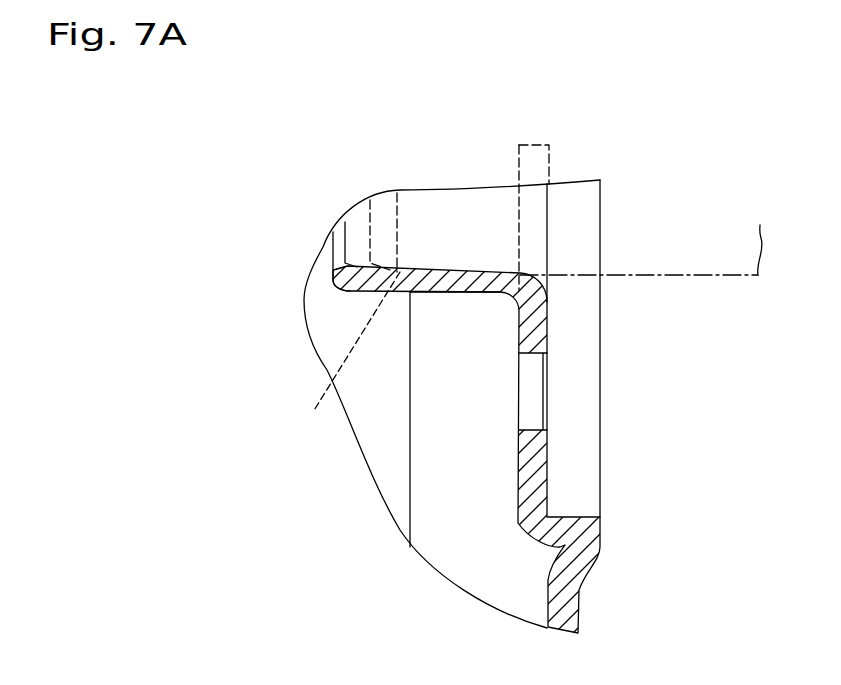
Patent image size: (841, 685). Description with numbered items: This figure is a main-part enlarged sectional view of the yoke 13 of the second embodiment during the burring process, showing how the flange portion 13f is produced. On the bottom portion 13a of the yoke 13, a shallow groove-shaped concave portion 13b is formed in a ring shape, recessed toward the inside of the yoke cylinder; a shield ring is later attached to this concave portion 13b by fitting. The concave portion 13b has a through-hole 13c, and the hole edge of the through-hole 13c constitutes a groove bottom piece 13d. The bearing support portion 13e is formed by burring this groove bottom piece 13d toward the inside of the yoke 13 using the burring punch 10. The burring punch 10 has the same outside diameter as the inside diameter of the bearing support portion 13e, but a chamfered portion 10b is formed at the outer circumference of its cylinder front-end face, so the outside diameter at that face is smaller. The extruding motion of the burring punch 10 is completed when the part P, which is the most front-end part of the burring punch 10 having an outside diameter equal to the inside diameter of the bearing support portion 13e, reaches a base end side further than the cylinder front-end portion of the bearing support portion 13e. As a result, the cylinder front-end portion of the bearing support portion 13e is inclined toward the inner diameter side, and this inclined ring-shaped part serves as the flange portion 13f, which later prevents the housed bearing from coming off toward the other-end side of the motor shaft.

The burring punch 10 is at (445, 223).
The chamfered portion 10b is at (355, 268).
The yoke 13 is at (506, 496).
The bottom portion 13a is at (567, 602).
The concave portion 13b is at (577, 517).
The through-hole 13c is at (535, 143).
The groove bottom piece 13d is at (538, 165).
The bearing support portion 13e is at (455, 293).
The flange portion 13f is at (335, 284).
The part P is at (350, 357).